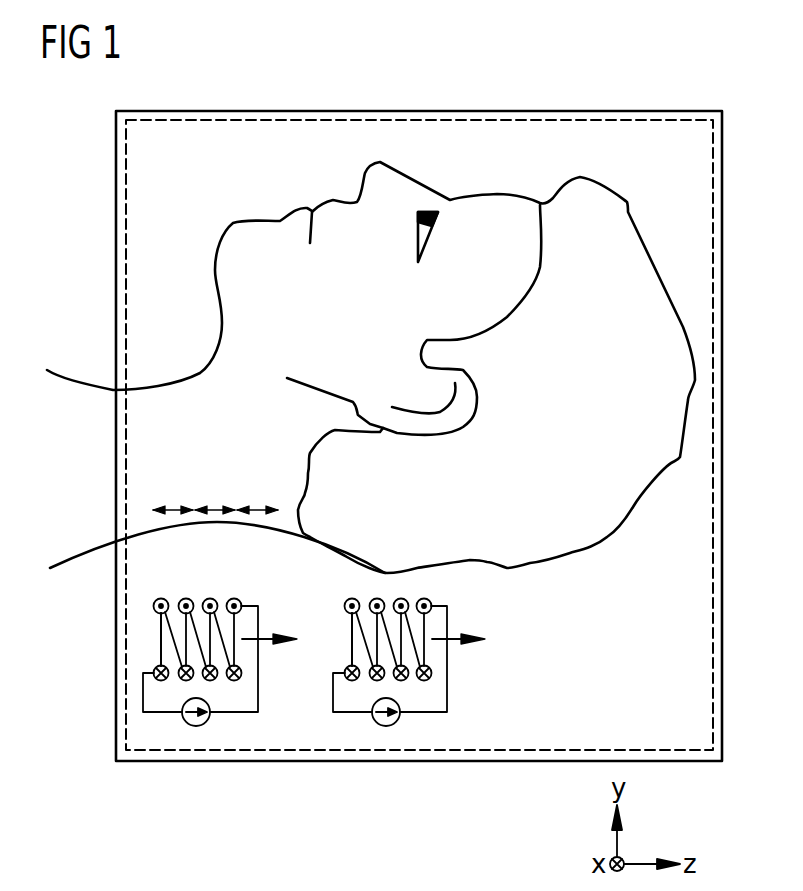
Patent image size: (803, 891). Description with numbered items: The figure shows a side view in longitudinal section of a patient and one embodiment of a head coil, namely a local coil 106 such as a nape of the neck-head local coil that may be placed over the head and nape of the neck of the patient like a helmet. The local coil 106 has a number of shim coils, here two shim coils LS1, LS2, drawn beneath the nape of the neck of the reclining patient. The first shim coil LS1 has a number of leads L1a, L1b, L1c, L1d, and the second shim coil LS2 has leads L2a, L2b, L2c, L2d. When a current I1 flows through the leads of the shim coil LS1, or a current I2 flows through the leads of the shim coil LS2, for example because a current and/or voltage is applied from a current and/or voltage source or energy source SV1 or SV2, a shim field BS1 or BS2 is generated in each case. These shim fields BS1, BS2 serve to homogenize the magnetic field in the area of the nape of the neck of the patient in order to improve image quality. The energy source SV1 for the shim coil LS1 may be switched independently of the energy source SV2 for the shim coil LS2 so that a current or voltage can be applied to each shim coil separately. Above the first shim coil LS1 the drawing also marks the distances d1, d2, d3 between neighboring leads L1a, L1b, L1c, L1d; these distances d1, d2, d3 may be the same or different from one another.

The local coil 106 is at (116, 253).
The lead L1a is at (154, 606).
The lead L1b is at (186, 599).
The lead L1c is at (210, 599).
The lead L1d is at (235, 599).
The lead L2a is at (429, 600).
The lead L2b is at (401, 599).
The lead L2c is at (377, 599).
The lead L2d is at (352, 599).
The current I1 is at (161, 642).
The current I2 is at (352, 623).
The shim field BS1 is at (276, 658).
The shim field BS2 is at (464, 659).
The current and/or voltage source SV1 is at (197, 727).
The current and/or voltage source SV2 is at (386, 727).
The shim coil LS1 is at (175, 682).
The shim coil LS2 is at (402, 673).
The distance d1 is at (173, 493).
The distance d2 is at (215, 493).
The distance d3 is at (257, 493).